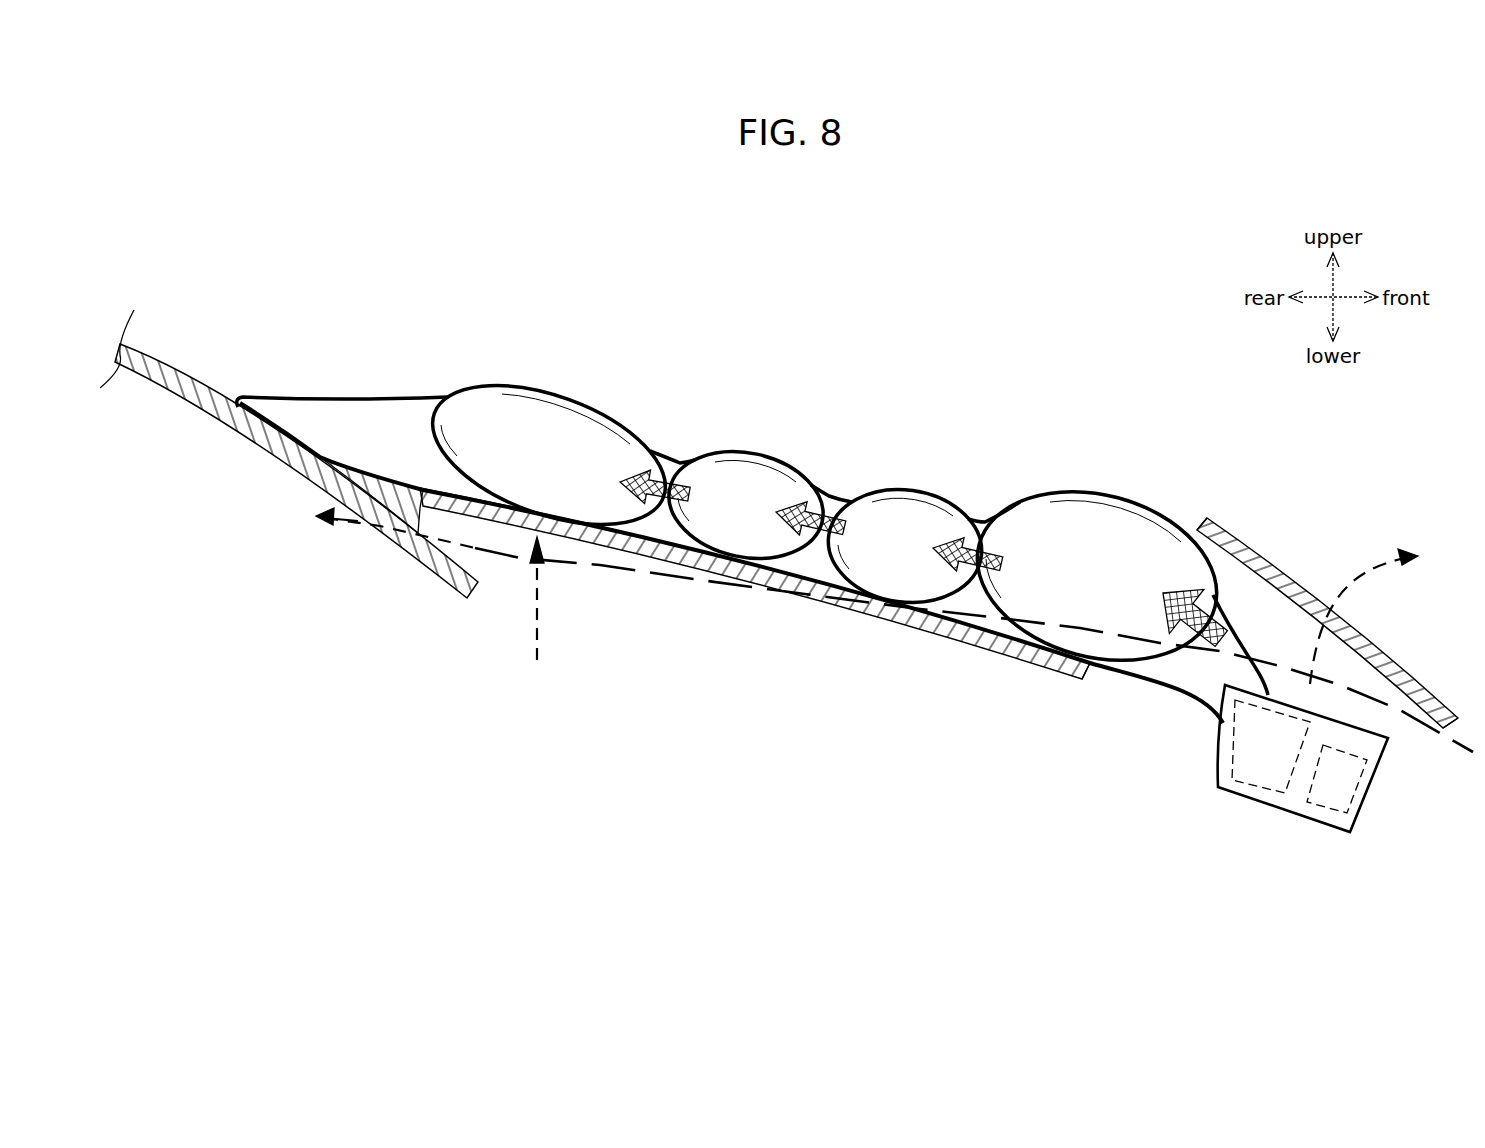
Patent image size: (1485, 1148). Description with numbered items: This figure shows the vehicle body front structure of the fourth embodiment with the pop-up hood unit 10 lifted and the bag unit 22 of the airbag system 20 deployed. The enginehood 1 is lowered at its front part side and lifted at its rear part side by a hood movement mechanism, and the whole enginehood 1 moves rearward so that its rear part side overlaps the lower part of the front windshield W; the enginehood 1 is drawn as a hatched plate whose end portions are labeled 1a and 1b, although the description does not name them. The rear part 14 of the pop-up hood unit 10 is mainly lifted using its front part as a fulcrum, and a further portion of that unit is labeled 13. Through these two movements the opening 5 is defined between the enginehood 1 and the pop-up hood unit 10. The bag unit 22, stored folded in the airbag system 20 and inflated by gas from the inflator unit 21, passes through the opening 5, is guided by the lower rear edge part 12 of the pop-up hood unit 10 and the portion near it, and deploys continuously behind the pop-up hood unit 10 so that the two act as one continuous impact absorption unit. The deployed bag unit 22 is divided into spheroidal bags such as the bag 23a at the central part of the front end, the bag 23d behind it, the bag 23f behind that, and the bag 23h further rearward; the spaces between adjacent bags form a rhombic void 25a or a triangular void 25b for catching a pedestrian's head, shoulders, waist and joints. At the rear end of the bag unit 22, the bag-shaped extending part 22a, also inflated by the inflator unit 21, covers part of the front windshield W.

The enginehood 1 is at (869, 637).
The front end of airbag device 1a is at (1072, 670).
The rear end of airbag device 1b is at (417, 534).
The opening 5 is at (1193, 513).
The pop-up hood unit 10 is at (1329, 565).
The lower rear edge part 12 is at (1222, 537).
The instrument panel lower portion 13 is at (1443, 712).
The rear part 14 is at (1212, 520).
The airbag system 20 is at (1389, 807).
The inflator unit 21 is at (1327, 814).
The bag unit 22 is at (803, 411).
The extending part 22a is at (362, 402).
The bag 23a is at (1088, 497).
The bag 23d is at (902, 492).
The bag 23f is at (757, 452).
The bag 23h is at (556, 386).
The void 25a is at (681, 460).
The void 25b is at (978, 520).
The front windshield W is at (202, 375).